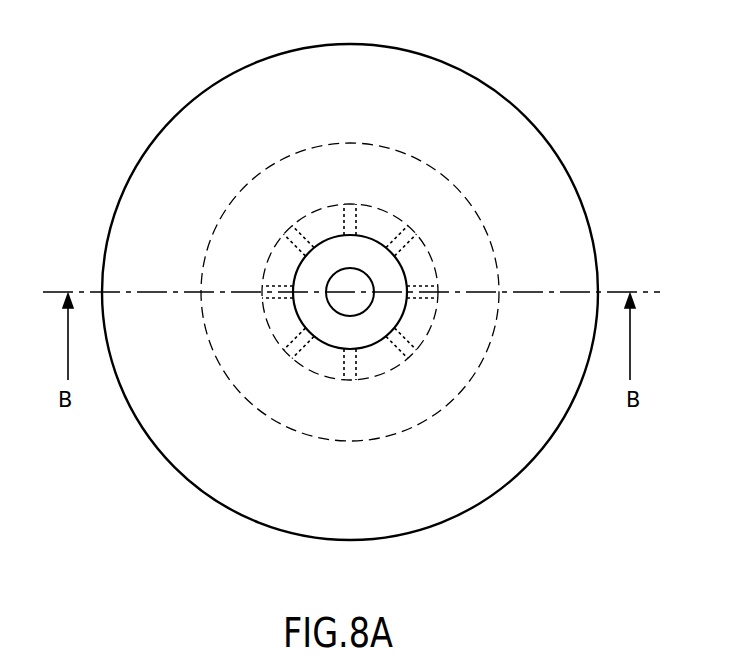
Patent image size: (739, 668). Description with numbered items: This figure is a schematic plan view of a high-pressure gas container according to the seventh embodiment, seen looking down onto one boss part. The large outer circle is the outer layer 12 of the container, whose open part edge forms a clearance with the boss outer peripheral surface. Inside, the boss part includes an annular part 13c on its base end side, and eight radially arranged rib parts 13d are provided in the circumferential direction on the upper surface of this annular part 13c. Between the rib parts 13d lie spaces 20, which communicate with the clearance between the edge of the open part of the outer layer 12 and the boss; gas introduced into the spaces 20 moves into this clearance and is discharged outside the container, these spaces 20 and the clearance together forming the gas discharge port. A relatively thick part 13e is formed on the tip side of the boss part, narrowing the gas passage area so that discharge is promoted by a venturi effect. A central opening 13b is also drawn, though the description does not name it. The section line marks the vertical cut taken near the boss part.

The outer layer 12 is at (420, 100).
The shaft hole 13b is at (361, 273).
The annular part 13c is at (450, 367).
The rib parts 13d is at (403, 227).
The thick part 13e is at (310, 277).
The spaces 20 is at (325, 230).